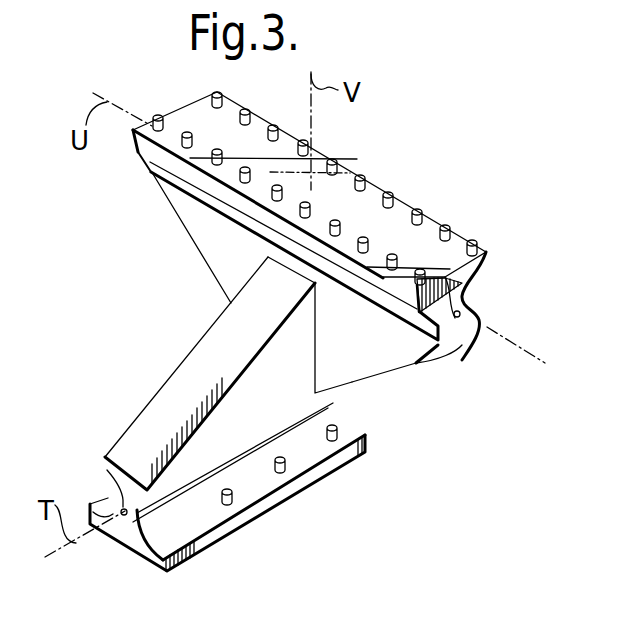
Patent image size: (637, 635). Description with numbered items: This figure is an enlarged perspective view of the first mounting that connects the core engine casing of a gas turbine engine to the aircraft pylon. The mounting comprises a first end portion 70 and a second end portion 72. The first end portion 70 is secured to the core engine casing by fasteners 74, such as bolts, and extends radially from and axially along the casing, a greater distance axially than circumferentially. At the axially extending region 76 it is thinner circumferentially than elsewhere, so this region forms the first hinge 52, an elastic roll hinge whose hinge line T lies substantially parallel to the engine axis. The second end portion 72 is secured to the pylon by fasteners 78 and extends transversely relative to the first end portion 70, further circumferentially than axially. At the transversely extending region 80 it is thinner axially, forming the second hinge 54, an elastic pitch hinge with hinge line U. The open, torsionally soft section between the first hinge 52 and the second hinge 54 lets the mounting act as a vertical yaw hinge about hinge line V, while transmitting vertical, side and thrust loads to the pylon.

The first hinge 52 is at (330, 408).
The second hinge 54 is at (462, 335).
The first end portion 70 is at (365, 448).
The second end portion 72 is at (152, 180).
The fasteners 74 is at (332, 440).
The axially extending region 76 is at (105, 465).
The fasteners 78 is at (145, 150).
The transversely extending region 80 is at (464, 299).